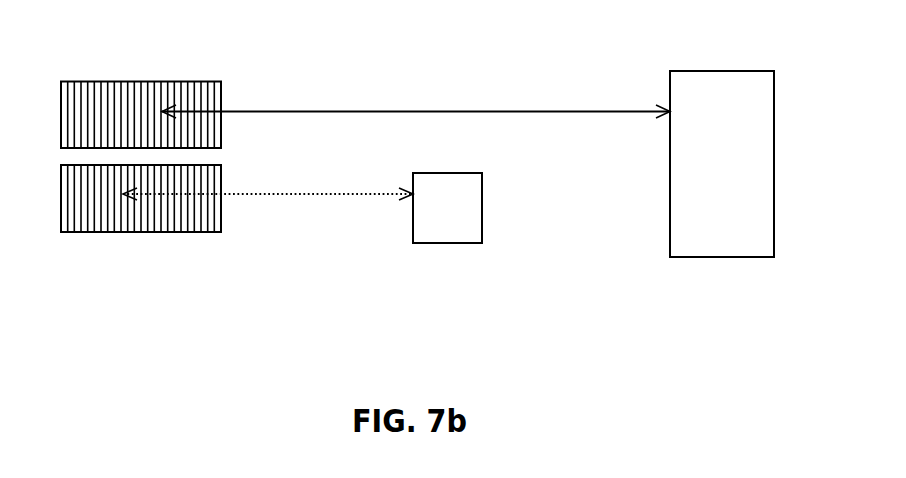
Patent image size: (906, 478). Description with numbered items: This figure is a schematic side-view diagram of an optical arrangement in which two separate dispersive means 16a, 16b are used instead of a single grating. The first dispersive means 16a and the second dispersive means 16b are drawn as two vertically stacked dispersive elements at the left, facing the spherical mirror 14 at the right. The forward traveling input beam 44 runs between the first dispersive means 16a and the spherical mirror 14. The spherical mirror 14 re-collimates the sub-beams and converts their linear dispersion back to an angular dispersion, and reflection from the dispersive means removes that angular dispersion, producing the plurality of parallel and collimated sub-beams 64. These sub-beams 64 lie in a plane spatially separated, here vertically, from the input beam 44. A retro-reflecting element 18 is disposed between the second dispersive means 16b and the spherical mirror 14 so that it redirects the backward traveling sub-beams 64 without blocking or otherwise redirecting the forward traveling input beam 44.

The first dispersive means 16a is at (107, 95).
The second dispersive means 16b is at (98, 222).
The forward traveling input beam 44 is at (387, 111).
The parallel and collimated sub-beams 64 is at (302, 194).
The retro-reflecting element 18 is at (448, 227).
The spherical mirror 14 is at (722, 243).